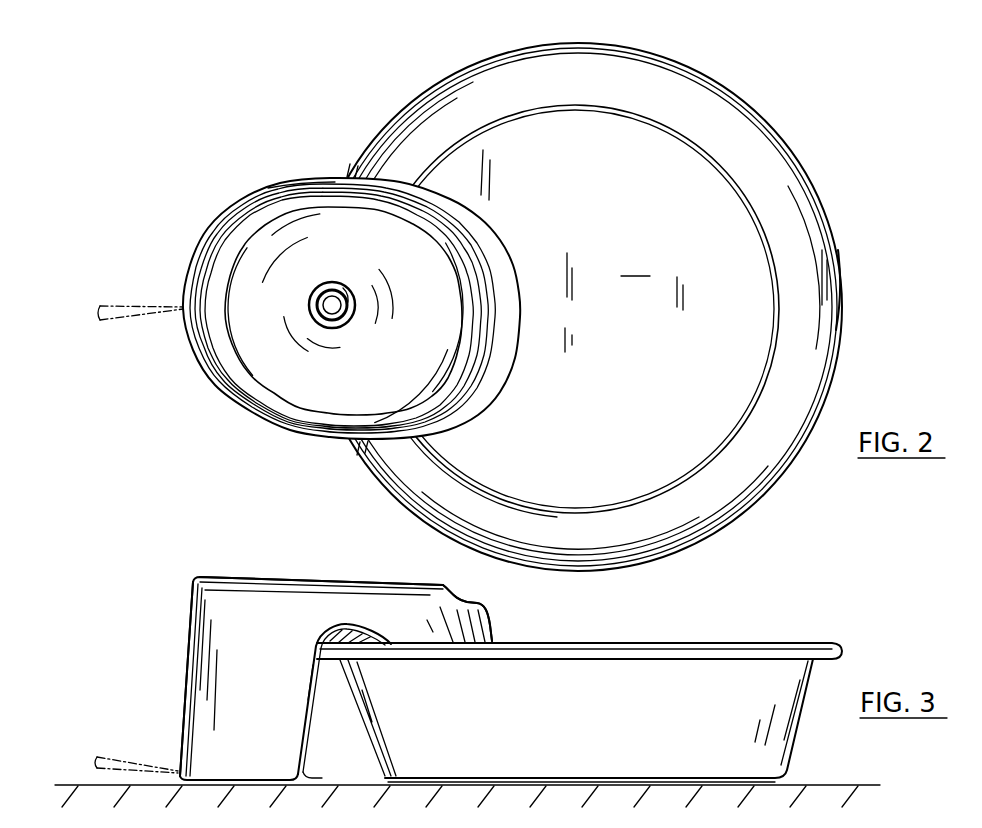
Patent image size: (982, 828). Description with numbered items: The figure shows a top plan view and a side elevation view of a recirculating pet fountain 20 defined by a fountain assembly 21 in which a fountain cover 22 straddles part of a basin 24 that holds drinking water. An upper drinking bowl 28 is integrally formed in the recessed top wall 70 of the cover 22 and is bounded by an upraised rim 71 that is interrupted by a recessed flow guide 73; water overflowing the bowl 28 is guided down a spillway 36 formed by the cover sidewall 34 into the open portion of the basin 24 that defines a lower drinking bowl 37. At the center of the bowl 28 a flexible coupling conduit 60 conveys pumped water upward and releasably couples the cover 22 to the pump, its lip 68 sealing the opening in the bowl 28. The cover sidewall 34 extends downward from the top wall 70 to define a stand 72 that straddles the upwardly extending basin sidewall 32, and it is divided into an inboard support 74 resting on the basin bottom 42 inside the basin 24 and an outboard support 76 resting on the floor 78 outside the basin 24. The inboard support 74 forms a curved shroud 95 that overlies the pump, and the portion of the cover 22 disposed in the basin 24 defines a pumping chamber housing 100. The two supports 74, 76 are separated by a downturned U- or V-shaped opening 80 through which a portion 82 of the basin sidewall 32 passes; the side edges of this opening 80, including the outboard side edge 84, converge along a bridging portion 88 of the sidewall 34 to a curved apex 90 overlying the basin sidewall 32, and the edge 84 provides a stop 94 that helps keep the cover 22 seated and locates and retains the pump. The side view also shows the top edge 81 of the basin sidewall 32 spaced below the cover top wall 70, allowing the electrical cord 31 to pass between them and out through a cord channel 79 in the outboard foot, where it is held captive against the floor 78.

In FIG. 2, the recirculating pet fountain 20 is at (616, 305).
In FIG. 3, the recirculating pet fountain 20 is at (631, 696).
In FIG. 2, the fountain assembly 21 is at (328, 315).
In FIG. 3, the fountain assembly 21 is at (301, 674).
In FIG. 2, the fountain cover 22 is at (217, 186).
In FIG. 3, the fountain cover 22 is at (180, 562).
In FIG. 2, the basin 24 is at (852, 268).
In FIG. 3, the basin 24 is at (846, 659).
In FIG. 2, the upper drinking bowl 28 is at (256, 361).
In FIG. 3, the upper drinking bowl 28 is at (298, 570).
In FIG. 2, the electrical cord 31 is at (131, 303).
In FIG. 3, the electrical cord 31 is at (128, 768).
In FIG. 2, the basin sidewall 32 is at (696, 76).
In FIG. 3, the basin sidewall 32 is at (805, 733).
In FIG. 2, the cover sidewall 34 is at (455, 402).
In FIG. 3, the cover sidewall 34 is at (186, 660).
In FIG. 2, the spillway 36 is at (493, 233).
In FIG. 2, the lower drinking bowl 37 is at (778, 207).
In FIG. 3, the lower drinking bowl 37 is at (742, 633).
In FIG. 2, the basin bottom 42 is at (635, 266).
In FIG. 2, the coupling conduit 60 is at (333, 282).
In FIG. 2, the lip 68 is at (346, 293).
In FIG. 2, the top wall 70 is at (292, 400).
In FIG. 2, the upraised rim 71 is at (278, 182).
In FIG. 3, the upraised rim 71 is at (240, 578).
In FIG. 3, the stand 72 is at (215, 790).
In FIG. 2, the recessed flow guide 73 is at (470, 267).
In FIG. 3, the recessed flow guide 73 is at (482, 603).
In FIG. 2, the inboard support 74 is at (487, 374).
In FIG. 3, the inboard support 74 is at (493, 616).
In FIG. 3, the outboard support 76 is at (185, 640).
In FIG. 3, the floor 78 is at (66, 781).
In FIG. 2, the cord channel 79 is at (182, 320).
In FIG. 3, the cord channel 79 is at (178, 775).
In FIG. 2, the opening 80 is at (336, 176).
In FIG. 3, the opening 80 is at (372, 620).
In FIG. 3, the top edge 81 is at (835, 650).
In FIG. 3, the basin sidewall portion 82 is at (387, 680).
In FIG. 3, the outboard side edge 84 is at (305, 712).
In FIG. 3, the bridging portion 88 is at (351, 617).
In FIG. 3, the apex 90 is at (332, 632).
In FIG. 3, the stop 94 is at (305, 680).
In FIG. 2, the shroud 95 is at (478, 220).
In FIG. 2, the pumping chamber housing 100 is at (543, 341).